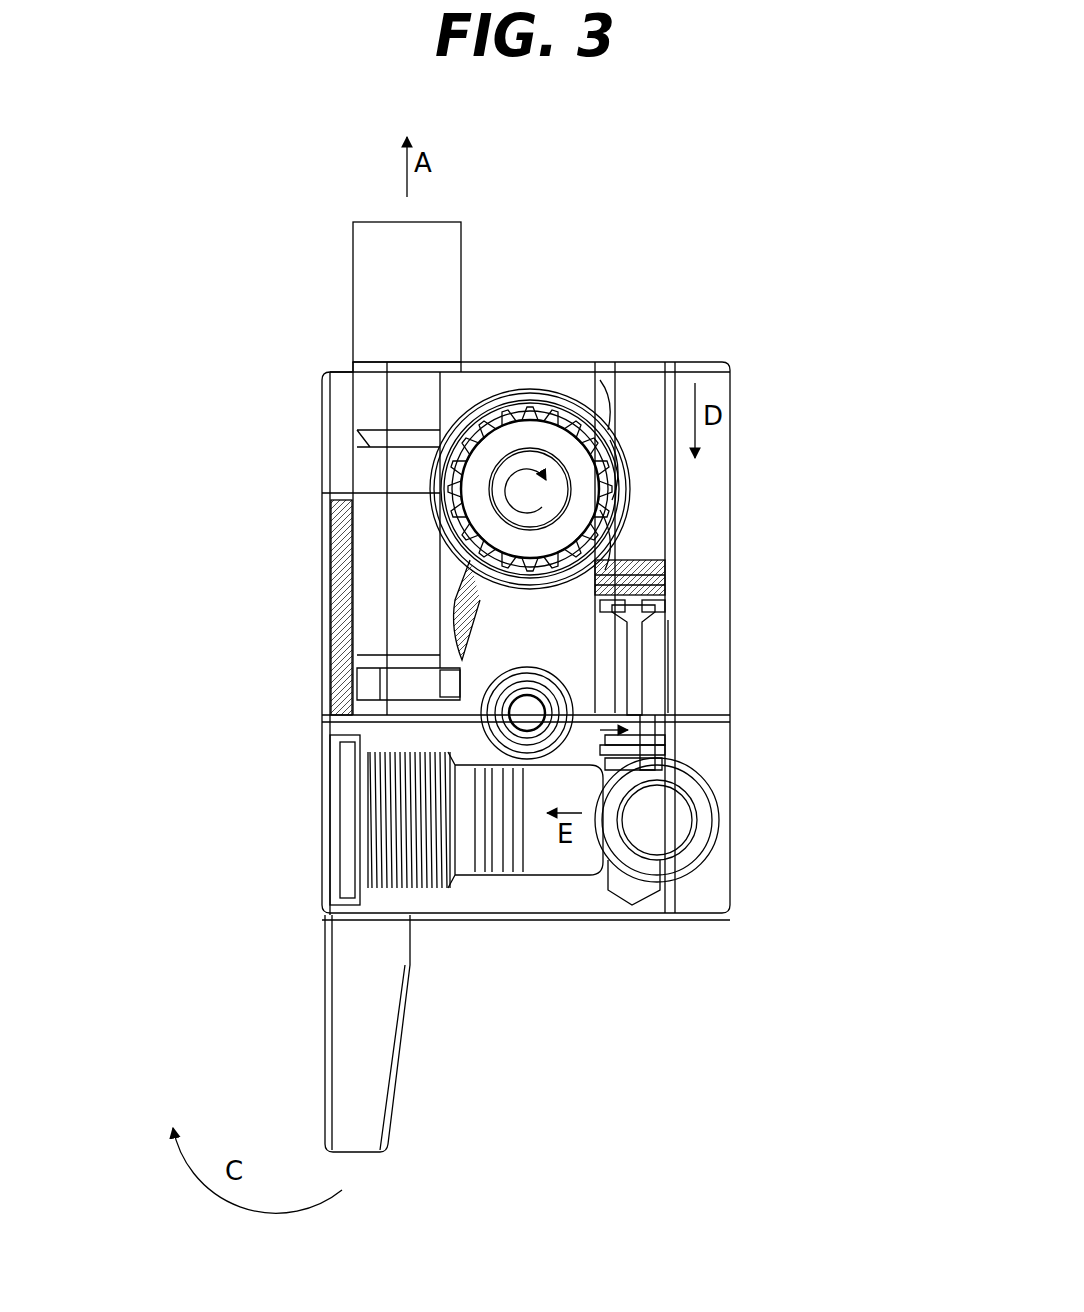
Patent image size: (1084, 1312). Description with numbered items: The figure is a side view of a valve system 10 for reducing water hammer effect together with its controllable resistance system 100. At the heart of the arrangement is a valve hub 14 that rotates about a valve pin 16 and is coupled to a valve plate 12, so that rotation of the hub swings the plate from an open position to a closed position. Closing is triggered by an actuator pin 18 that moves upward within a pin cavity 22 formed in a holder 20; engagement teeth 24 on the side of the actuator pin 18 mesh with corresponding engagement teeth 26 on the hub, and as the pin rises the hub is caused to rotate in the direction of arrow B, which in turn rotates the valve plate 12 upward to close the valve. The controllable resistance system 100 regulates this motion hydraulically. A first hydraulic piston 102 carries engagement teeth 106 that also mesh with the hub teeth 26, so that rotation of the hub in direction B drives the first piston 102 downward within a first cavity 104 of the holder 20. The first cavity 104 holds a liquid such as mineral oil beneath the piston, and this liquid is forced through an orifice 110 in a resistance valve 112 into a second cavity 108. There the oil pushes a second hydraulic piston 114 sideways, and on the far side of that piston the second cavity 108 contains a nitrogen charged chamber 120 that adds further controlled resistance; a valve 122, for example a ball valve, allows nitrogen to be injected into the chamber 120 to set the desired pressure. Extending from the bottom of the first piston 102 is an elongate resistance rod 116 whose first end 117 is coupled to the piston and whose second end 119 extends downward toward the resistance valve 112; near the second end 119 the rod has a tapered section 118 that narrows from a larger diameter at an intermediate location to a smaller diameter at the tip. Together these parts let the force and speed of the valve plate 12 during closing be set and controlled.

The valve system 10 is at (690, 170).
The controllable resistance system 100 is at (737, 257).
The valve plate 12 is at (325, 1022).
The valve hub 14 is at (522, 427).
The valve pin 16 is at (531, 488).
The actuator pin 18 is at (353, 292).
The holder 20 is at (322, 446).
The pin cavity 22 is at (353, 400).
The engagement teeth 24 is at (470, 660).
The engagement teeth 26 is at (512, 415).
The first hydraulic piston 102 is at (640, 395).
The first cavity 104 is at (672, 615).
The engagement teeth 106 is at (612, 482).
The second cavity 108 is at (578, 870).
The orifice 110 is at (670, 745).
The resistance valve 112 is at (672, 735).
The second hydraulic piston 114 is at (533, 830).
The resistance rod 116 is at (645, 668).
The first end 117 is at (628, 628).
The tapered section 118 is at (598, 730).
The second end 119 is at (672, 697).
The nitrogen charged chamber 120 is at (473, 892).
The valve 122 is at (318, 808).
The arrow B is at (500, 510).